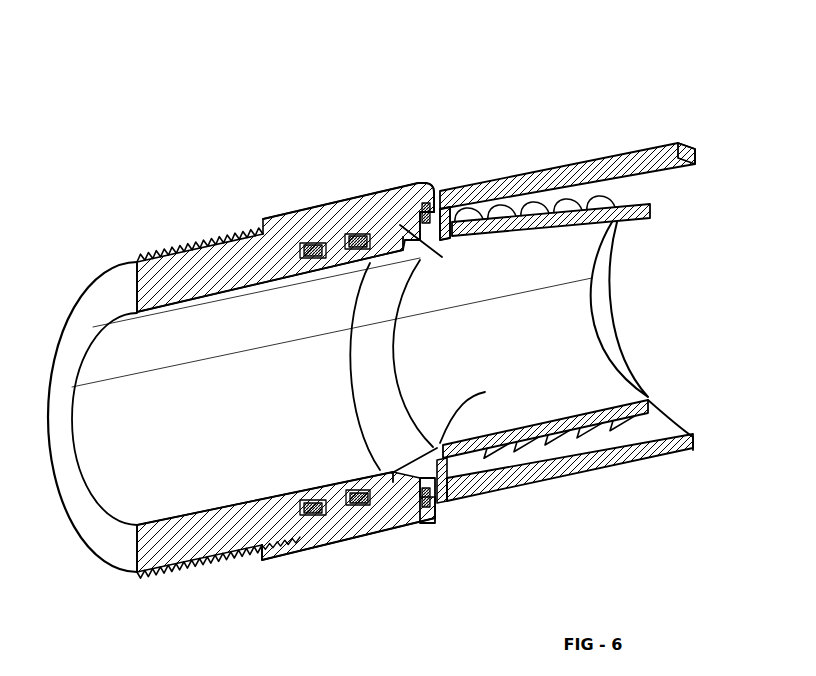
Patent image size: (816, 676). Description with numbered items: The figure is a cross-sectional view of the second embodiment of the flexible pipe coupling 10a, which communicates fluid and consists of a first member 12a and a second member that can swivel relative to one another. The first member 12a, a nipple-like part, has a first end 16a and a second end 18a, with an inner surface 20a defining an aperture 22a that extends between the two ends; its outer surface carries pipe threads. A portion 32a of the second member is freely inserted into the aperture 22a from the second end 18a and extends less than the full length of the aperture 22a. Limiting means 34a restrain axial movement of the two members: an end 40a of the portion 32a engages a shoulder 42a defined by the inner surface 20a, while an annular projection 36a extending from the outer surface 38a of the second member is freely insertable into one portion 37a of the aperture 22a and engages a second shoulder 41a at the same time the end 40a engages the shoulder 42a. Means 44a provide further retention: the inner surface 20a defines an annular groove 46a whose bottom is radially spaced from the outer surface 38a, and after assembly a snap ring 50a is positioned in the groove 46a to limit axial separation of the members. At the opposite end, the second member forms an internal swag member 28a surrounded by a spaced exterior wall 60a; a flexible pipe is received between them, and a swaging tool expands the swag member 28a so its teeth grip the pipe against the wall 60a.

The flexible pipe coupling 10a is at (584, 259).
The first member 12a is at (98, 254).
The first end 16a is at (150, 572).
The second end 18a is at (447, 203).
The inner surface 20a is at (233, 313).
The aperture 22a is at (168, 300).
The internal swag member 28a is at (652, 420).
The portion of the second member 32a is at (372, 485).
The limiting means 34a is at (282, 523).
The annular projection 36a is at (423, 203).
The portion of the aperture 37a is at (417, 212).
The outer surface of the second member 38a is at (337, 250).
The end of the portion 40a is at (268, 500).
The shoulder 41a is at (363, 396).
The shoulder 42a is at (290, 272).
The means 44a is at (434, 167).
The annular groove 46a is at (437, 515).
The snap ring 50a is at (440, 440).
The exterior wall 60a is at (688, 148).